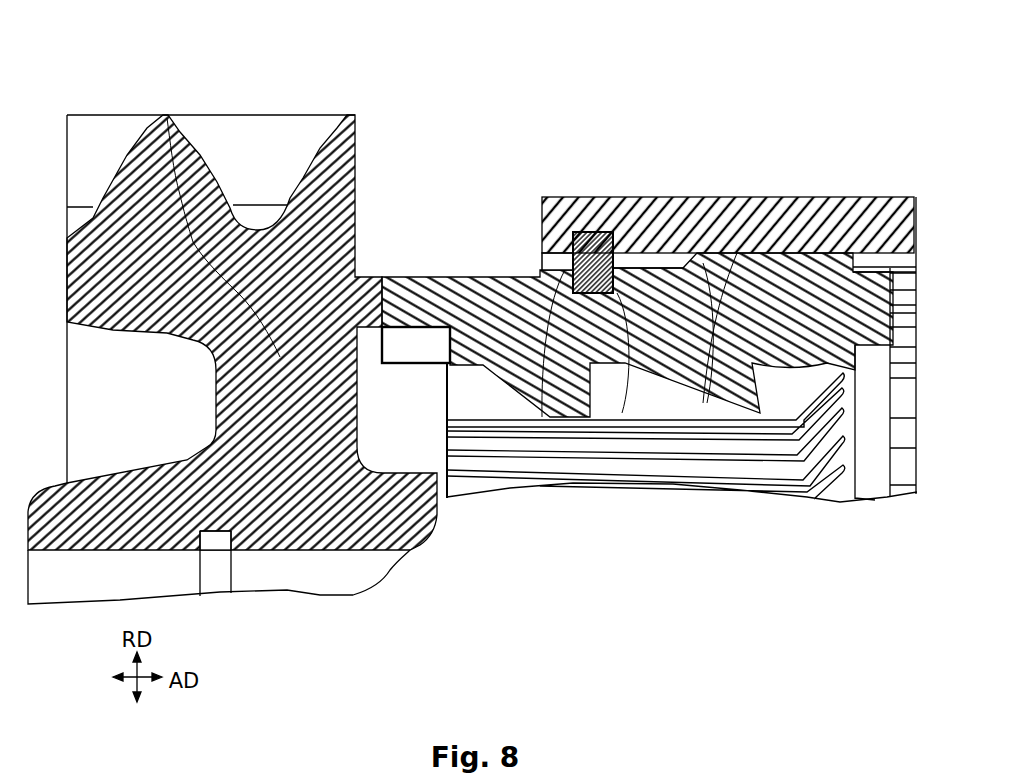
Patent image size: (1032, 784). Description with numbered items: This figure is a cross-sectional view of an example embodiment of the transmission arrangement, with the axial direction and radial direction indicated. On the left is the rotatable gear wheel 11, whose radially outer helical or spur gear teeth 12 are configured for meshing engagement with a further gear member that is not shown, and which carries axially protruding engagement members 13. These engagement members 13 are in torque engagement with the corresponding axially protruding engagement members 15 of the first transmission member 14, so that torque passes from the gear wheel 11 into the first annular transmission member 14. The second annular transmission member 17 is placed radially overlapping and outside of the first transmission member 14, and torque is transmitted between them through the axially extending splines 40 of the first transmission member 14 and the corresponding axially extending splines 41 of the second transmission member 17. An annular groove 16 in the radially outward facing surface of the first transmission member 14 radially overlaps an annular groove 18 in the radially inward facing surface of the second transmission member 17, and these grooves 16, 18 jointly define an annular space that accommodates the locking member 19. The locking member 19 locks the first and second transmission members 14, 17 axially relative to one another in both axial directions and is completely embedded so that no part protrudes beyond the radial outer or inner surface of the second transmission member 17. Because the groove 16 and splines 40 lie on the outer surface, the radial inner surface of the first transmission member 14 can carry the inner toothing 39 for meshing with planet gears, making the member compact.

The gear wheel 11 is at (232, 275).
The gear teeth 12 is at (303, 172).
The axially protruding engagement members 13 is at (414, 423).
The first transmission member 14 is at (637, 208).
The axially protruding engagement members 15 is at (410, 308).
The annular groove 16 is at (622, 285).
The second transmission member 17 is at (728, 134).
The annular groove 18 is at (539, 365).
The locking member 19 is at (592, 232).
The inner toothing 39 is at (740, 253).
The axially extending splines 40 is at (803, 267).
The axially extending splines 41 is at (825, 197).